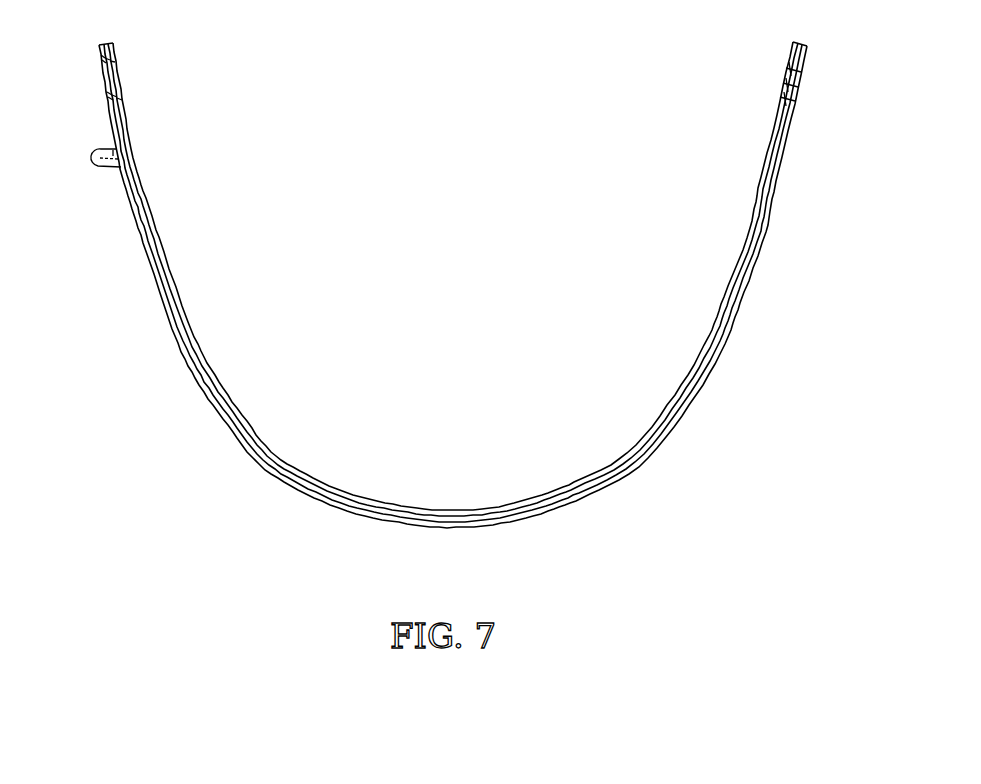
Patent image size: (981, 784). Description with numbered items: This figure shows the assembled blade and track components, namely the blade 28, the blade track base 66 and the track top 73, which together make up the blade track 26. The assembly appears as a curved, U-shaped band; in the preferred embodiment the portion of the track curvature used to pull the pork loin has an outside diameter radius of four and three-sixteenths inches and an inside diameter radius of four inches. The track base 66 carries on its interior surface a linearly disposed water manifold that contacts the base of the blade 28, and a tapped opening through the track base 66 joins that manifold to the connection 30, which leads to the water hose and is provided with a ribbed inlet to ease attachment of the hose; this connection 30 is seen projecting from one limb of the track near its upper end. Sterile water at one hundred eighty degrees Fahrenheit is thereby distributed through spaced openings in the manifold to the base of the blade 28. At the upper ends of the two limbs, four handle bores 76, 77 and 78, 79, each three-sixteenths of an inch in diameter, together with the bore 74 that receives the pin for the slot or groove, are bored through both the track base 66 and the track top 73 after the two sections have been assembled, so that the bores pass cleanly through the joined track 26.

The blade track 26 is at (453, 285).
The blade 28 is at (453, 285).
The connection 30 is at (107, 170).
The blade track base 66 is at (453, 285).
The track top 73 is at (455, 510).
The bore 74 is at (790, 86).
The handle bore 76 is at (793, 72).
The handle bore 77 is at (783, 102).
The handle bore 78 is at (124, 100).
The handle bore 79 is at (114, 61).